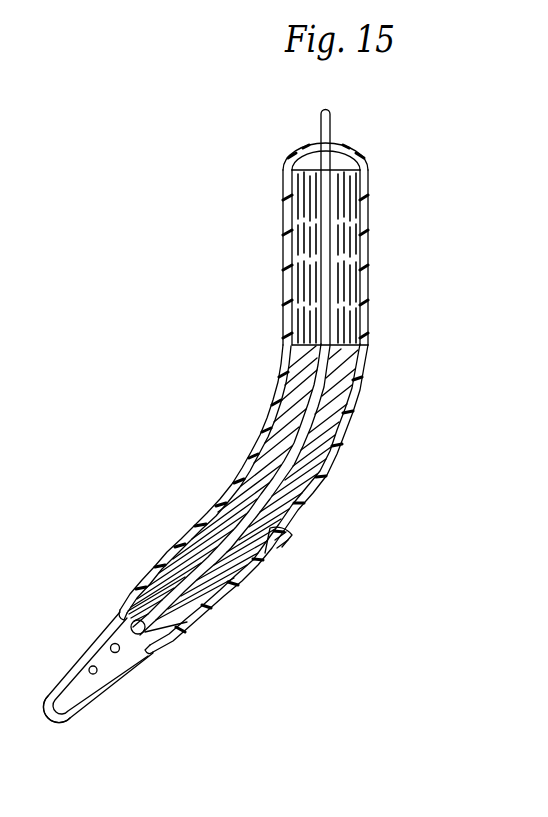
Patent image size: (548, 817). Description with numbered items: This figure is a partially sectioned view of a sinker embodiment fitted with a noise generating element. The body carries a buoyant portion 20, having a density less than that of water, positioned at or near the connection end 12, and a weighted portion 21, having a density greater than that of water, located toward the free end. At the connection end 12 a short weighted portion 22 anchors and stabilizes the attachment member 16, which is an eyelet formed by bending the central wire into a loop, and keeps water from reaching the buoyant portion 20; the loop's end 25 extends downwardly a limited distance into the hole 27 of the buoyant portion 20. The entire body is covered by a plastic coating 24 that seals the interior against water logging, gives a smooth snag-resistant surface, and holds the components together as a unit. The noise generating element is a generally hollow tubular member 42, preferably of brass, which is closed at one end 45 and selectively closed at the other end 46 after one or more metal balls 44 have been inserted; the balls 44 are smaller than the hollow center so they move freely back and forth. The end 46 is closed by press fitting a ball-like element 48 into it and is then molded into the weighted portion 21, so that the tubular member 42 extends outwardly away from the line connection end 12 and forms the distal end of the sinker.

The connection end 12 is at (355, 150).
The attachment member 16 is at (336, 102).
The buoyant portion 20 is at (355, 325).
The weighted portion 21 is at (270, 438).
The weighted portion 22 is at (296, 158).
The plastic coating 24 is at (305, 518).
The end 25 is at (330, 212).
The hole 27 is at (330, 238).
The tubular member 42 is at (118, 663).
The balls 44 is at (89, 670).
The end 45 is at (63, 714).
The end 46 is at (163, 620).
The ball-like element 48 is at (123, 625).